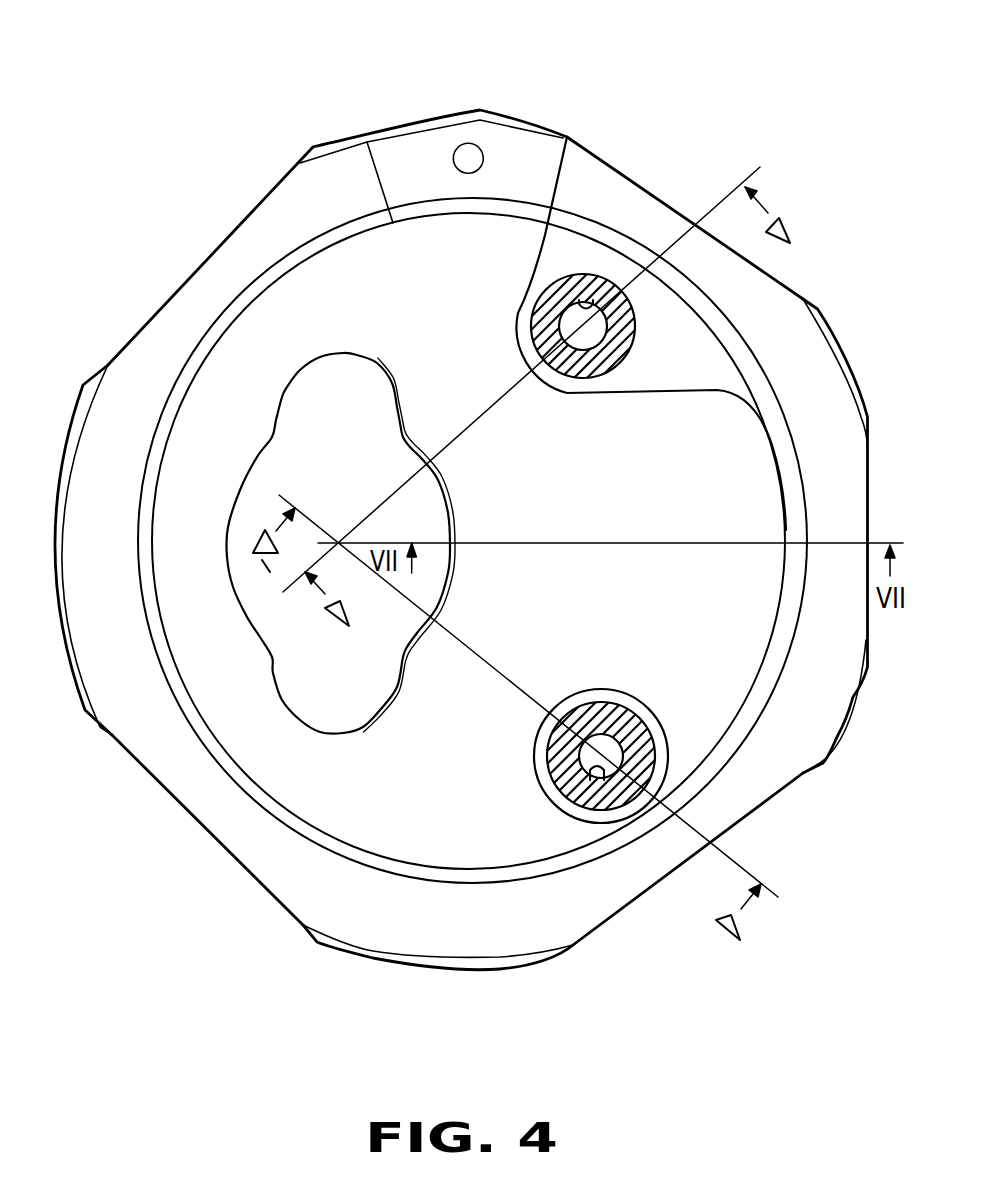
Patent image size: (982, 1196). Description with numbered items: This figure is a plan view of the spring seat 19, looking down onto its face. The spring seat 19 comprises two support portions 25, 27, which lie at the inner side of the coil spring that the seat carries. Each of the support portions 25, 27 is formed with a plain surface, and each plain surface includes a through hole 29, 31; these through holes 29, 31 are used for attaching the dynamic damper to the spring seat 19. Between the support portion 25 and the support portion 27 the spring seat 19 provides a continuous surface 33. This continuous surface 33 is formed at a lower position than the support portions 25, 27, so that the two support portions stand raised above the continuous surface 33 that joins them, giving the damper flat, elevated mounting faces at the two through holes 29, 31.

The spring seat 19 is at (346, 125).
The support portion 25 is at (607, 290).
The support portion 27 is at (641, 760).
The through hole 29 is at (583, 300).
The through hole 31 is at (604, 779).
The continuous surface 33 is at (700, 623).